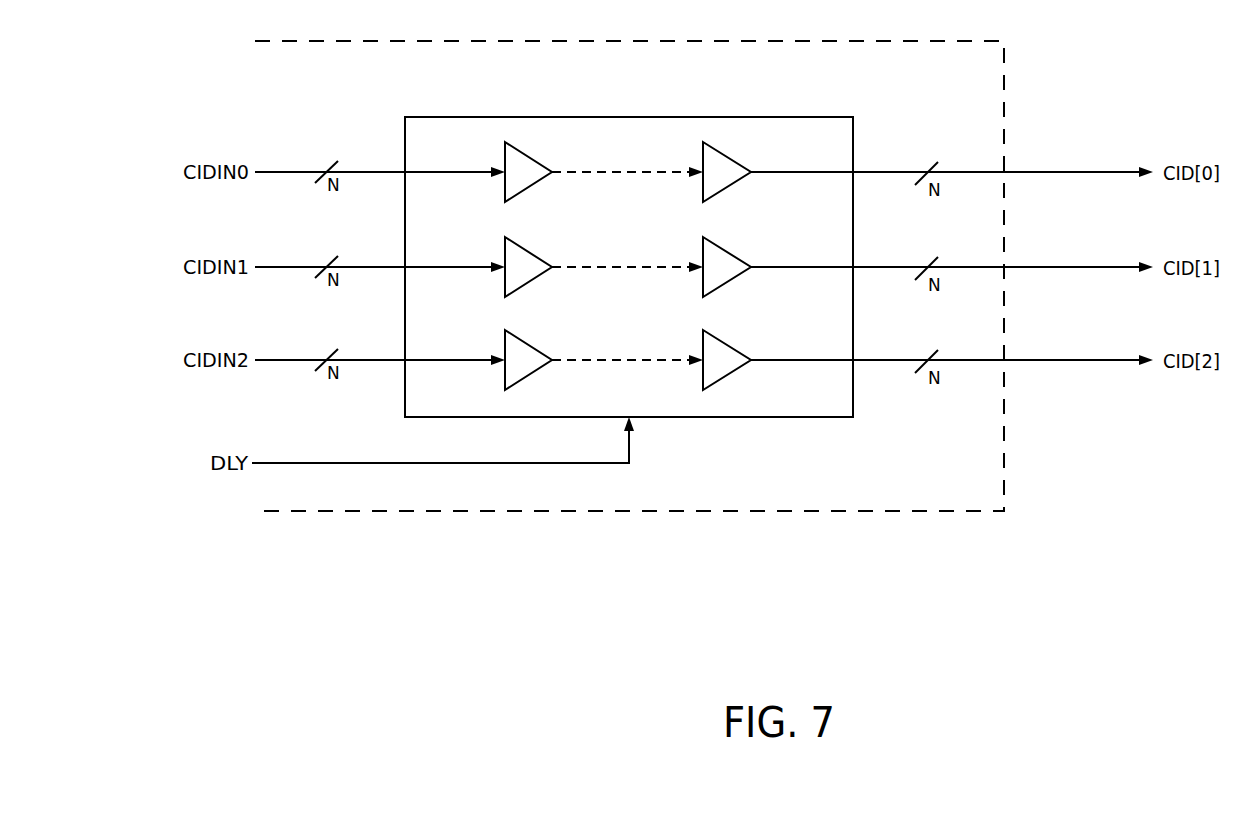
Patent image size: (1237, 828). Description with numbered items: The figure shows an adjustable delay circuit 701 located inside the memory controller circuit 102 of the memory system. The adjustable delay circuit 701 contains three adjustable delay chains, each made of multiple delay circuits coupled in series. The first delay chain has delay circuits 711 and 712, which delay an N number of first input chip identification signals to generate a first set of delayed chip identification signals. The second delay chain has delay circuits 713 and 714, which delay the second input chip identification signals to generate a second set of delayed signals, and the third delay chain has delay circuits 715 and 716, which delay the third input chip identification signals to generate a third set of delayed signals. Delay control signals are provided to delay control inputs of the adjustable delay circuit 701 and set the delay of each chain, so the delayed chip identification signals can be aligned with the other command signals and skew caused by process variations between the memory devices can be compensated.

The memory controller circuit 102 is at (534, 41).
The adjustable delay circuit 701 is at (460, 117).
The delay circuit 711 is at (538, 163).
The delay circuit 712 is at (733, 162).
The delay circuit 713 is at (536, 256).
The delay circuit 714 is at (733, 256).
The delay circuit 715 is at (537, 349).
The delay circuit 716 is at (728, 345).